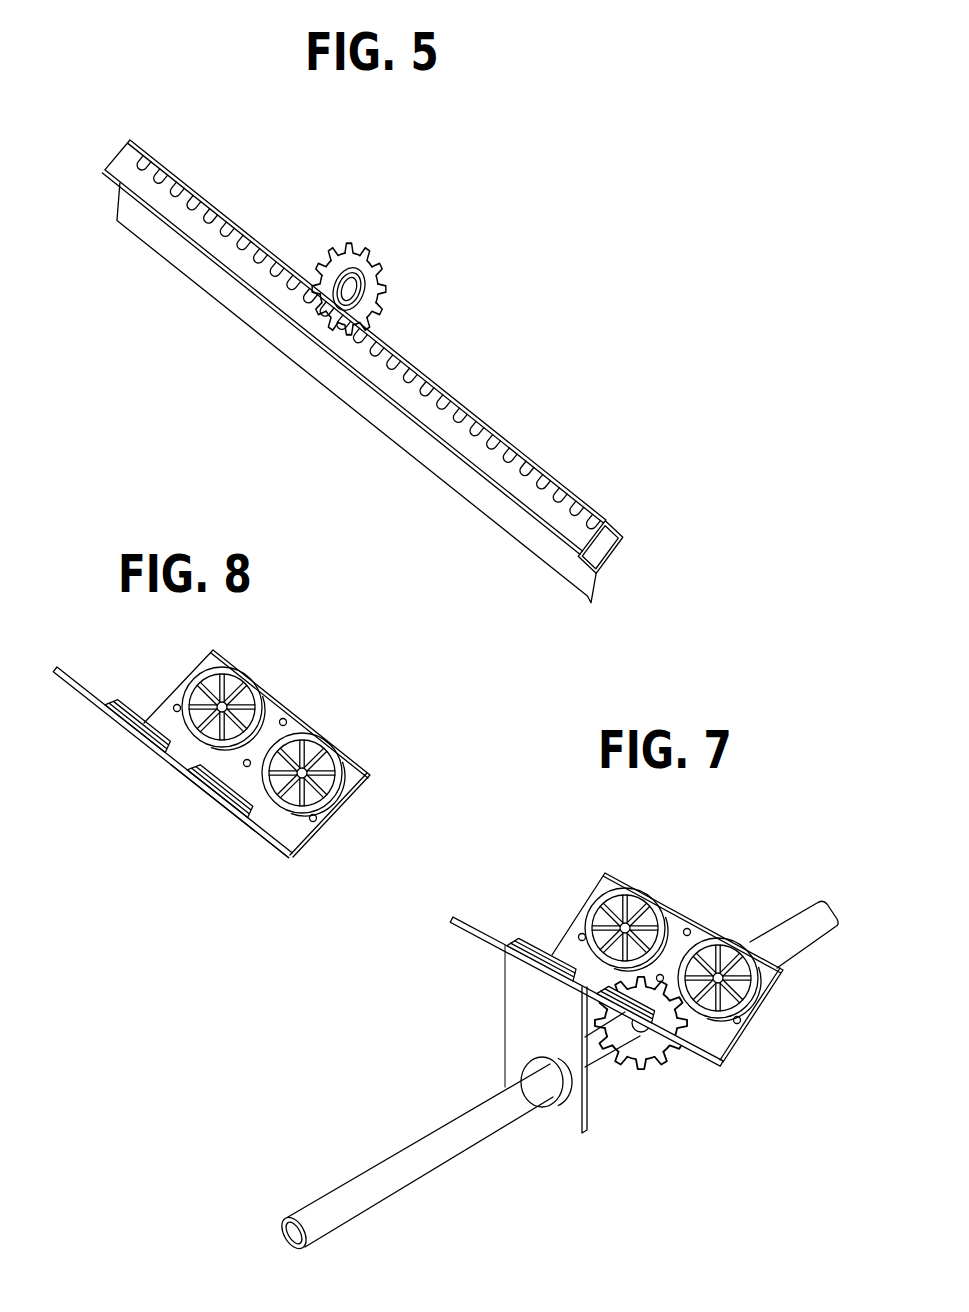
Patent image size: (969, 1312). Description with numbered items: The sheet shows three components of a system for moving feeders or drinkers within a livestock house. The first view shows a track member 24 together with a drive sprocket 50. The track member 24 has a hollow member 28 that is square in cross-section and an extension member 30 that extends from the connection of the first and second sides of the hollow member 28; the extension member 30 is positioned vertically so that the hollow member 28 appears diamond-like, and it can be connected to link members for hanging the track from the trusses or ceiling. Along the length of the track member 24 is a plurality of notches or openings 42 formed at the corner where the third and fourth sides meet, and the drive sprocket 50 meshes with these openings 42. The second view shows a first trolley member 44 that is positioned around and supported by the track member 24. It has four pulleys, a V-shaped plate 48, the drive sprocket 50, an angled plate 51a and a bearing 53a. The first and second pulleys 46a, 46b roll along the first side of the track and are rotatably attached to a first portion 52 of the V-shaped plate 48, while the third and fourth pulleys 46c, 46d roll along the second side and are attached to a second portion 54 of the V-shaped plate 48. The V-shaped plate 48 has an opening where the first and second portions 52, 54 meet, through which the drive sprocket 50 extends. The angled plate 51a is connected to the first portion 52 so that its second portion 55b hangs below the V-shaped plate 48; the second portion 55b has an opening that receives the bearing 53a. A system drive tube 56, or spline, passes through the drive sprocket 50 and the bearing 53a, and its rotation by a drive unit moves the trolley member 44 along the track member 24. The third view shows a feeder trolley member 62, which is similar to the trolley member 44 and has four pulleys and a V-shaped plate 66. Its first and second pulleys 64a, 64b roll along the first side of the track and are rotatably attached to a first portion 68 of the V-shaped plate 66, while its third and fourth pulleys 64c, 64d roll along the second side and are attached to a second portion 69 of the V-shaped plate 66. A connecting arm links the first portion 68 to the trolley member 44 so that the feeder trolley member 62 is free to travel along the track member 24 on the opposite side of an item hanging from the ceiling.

In FIG. 5, the track member 24 is at (623, 537).
In FIG. 5, the hollow member 28 is at (612, 518).
In FIG. 5, the extension member 30 is at (512, 530).
In FIG. 5, the notches or openings 42 is at (168, 170).
In FIG. 5, the drive sprocket 50 is at (357, 250).
In FIG. 7, the drive sprocket 50 is at (657, 1069).
In FIG. 7, the first trolley member 44 is at (580, 1032).
In FIG. 7, the first pulley 46a is at (636, 1003).
In FIG. 7, the second pulley 46b is at (540, 940).
In FIG. 7, the third pulley 46c is at (760, 987).
In FIG. 7, the fourth pulley 46d is at (630, 887).
In FIG. 7, the V-shaped plate 48 is at (740, 1035).
In FIG. 7, the angled plate 51a is at (528, 1002).
In FIG. 7, the first portion of the V-shaped plate 52 is at (693, 1047).
In FIG. 7, the bearing 53a is at (545, 1108).
In FIG. 7, the second portion of the V-shaped plate 54 is at (760, 1017).
In FIG. 7, the second portion of the angled plate 55b is at (528, 1033).
In FIG. 7, the system drive tube 56 is at (418, 1163).
In FIG. 8, the feeder trolley member 62 is at (228, 803).
In FIG. 8, the first pulley 64a is at (203, 787).
In FIG. 8, the second pulley 64b is at (113, 717).
In FIG. 8, the third pulley 64c is at (330, 738).
In FIG. 8, the fourth pulley 64d is at (237, 680).
In FIG. 8, the V-shaped plate 66 is at (262, 833).
In FIG. 8, the first portion of the V-shaped plate 68 is at (240, 835).
In FIG. 8, the second portion of the V-shaped plate 69 is at (303, 830).